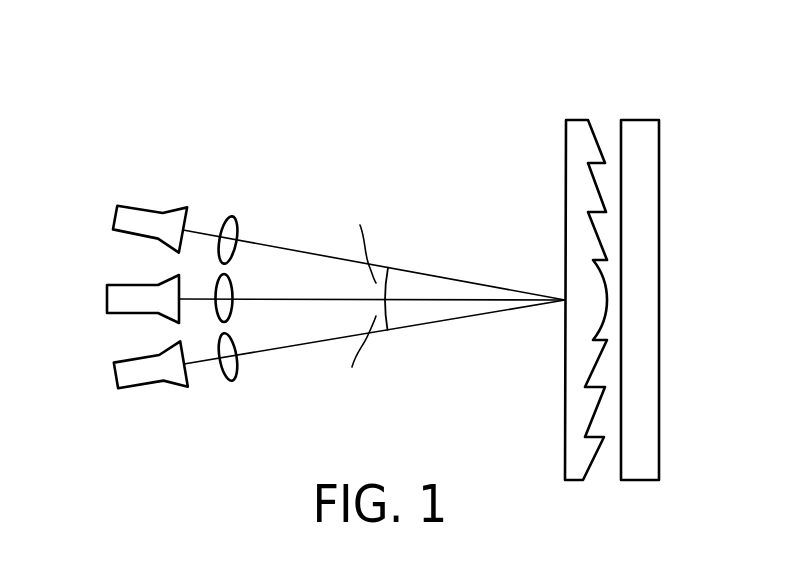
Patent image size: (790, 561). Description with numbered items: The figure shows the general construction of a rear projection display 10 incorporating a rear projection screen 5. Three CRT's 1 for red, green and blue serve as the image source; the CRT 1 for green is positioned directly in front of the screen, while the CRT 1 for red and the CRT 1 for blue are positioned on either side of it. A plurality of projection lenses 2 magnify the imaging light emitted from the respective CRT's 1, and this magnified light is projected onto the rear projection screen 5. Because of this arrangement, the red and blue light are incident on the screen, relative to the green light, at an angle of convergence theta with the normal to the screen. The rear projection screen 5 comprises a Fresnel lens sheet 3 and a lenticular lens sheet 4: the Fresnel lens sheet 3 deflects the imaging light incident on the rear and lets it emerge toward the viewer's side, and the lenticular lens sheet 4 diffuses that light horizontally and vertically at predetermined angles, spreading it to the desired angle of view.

The CRT 1 is at (137, 222).
The projection lens 2 is at (233, 232).
The Fresnel lens sheet 3 is at (576, 140).
The lenticular lens sheet 4 is at (637, 138).
The rear projection screen 5 is at (557, 63).
The rear projection display 10 is at (392, 104).